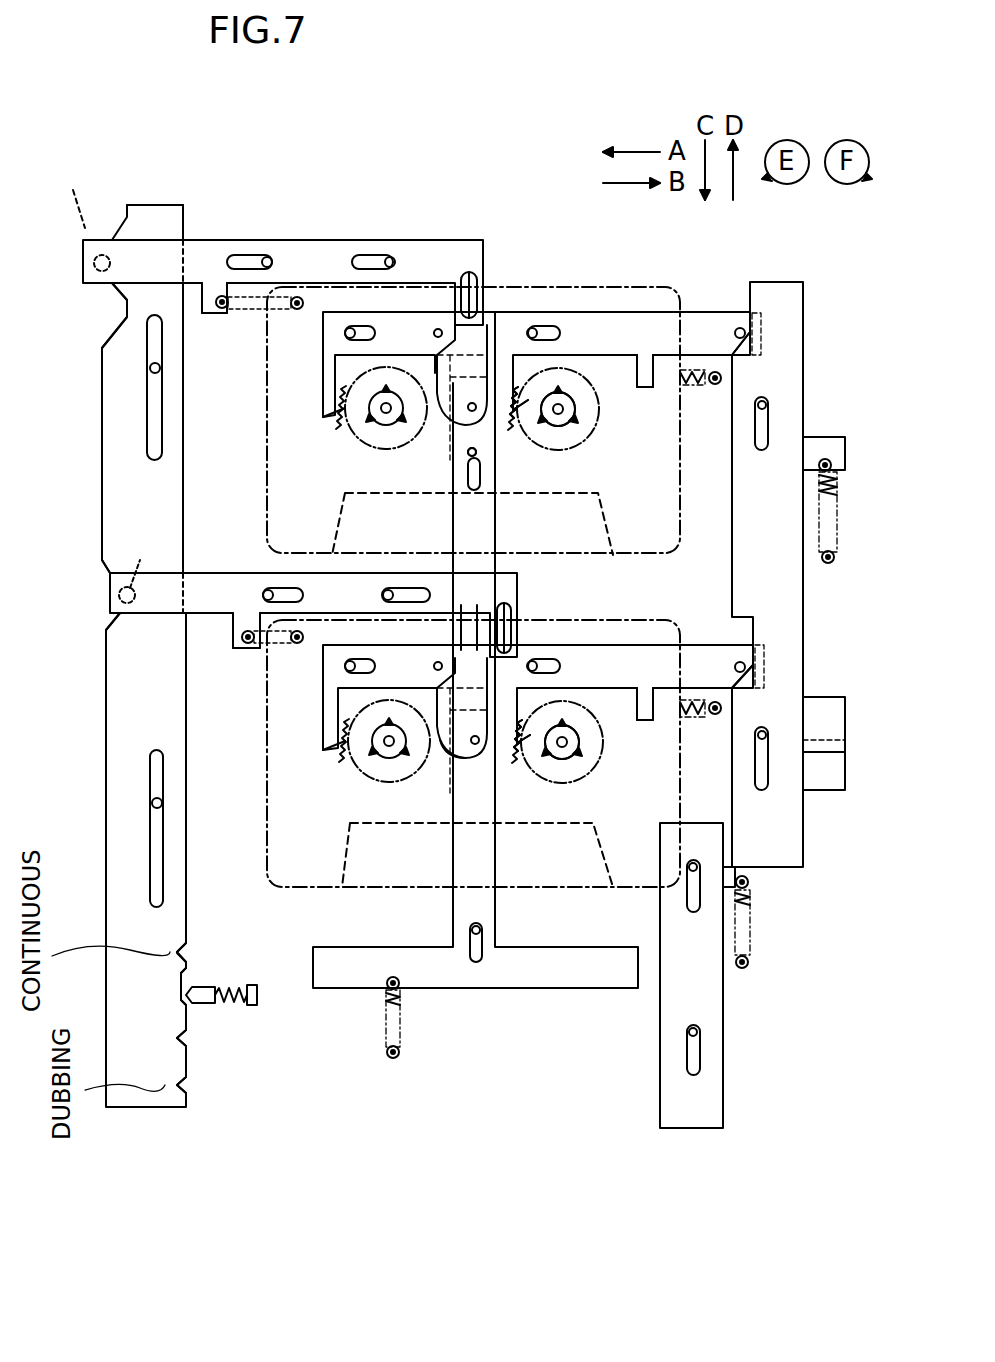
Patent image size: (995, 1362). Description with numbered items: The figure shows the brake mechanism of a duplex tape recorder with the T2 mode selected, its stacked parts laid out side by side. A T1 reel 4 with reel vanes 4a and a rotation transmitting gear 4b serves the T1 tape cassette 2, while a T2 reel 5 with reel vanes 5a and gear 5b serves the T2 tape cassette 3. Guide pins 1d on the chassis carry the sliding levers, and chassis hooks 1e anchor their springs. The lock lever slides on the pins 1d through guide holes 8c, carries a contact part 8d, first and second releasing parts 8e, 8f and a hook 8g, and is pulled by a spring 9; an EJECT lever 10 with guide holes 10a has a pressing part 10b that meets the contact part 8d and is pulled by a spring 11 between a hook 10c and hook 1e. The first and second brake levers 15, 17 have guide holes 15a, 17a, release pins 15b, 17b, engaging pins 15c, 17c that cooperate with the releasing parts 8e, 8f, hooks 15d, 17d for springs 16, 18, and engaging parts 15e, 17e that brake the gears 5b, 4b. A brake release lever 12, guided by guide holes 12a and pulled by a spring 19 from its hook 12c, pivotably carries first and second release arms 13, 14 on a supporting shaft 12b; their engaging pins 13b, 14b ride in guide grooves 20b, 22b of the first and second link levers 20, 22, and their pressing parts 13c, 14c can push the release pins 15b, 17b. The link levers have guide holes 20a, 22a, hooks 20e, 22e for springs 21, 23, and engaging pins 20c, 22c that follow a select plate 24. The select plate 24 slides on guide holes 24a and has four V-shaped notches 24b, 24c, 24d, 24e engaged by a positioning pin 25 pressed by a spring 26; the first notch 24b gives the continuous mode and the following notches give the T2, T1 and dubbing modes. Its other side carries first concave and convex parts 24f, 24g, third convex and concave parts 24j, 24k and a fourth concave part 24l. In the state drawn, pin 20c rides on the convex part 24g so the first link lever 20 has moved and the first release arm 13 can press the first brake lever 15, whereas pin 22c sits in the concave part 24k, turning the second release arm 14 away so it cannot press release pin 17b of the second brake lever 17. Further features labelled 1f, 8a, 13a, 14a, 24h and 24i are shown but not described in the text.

The guide pin 1d is at (272, 258).
The hook 1e is at (297, 310).
The spring anchor block 1f is at (257, 995).
The T1 tape cassette 2 is at (267, 828).
The T2 tape cassette 3 is at (267, 468).
The T1 reel 4 is at (389, 783).
The reel vanes 4a is at (590, 748).
The rotation transmitting gear 4b is at (538, 765).
The T2 reel 5 is at (386, 450).
The reel vanes 5a is at (585, 425).
The rotation transmitting gear 5b is at (540, 432).
The tab of plate 8 8a is at (820, 790).
The guide holes 8c is at (762, 452).
The contact part 8d is at (790, 868).
The first releasing part 8e is at (745, 340).
The second releasing part 8f is at (742, 674).
The hook 8g is at (825, 458).
The spring 9 is at (837, 516).
The EJECT lever 10 is at (695, 1129).
The guide holes 10a is at (700, 905).
The pressing part 10b is at (735, 867).
The hook 10c is at (748, 888).
The spring 11 is at (752, 948).
The brake release lever 12 is at (575, 988).
The guide holes 12a is at (482, 480).
The supporting shaft 12b is at (468, 411).
The hook 12c is at (398, 978).
The first release arm 13 is at (437, 366).
The pin of brake lever 13a is at (478, 452).
The engaging pin 13b is at (482, 300).
The pressing part 13c is at (466, 407).
The second release arm 14 is at (437, 696).
The tip of brake lever 14a is at (455, 760).
The engaging pin 14b is at (495, 640).
The pressing part 14c is at (467, 740).
The first brake lever 15 is at (606, 326).
The guide holes 15a is at (375, 333).
The release pin 15b is at (436, 329).
The engaging pin 15c is at (740, 338).
The hook 15d is at (647, 355).
The engaging part 15e is at (335, 415).
The spring 16 is at (692, 385).
The second brake lever 17 is at (622, 654).
The guide holes 17a is at (372, 660).
The release pin 17b is at (434, 667).
The engaging pin 17c is at (740, 668).
The hook 17d is at (645, 720).
The engaging part 17e is at (338, 748).
The spring 18 is at (693, 711).
The spring 19 is at (402, 1020).
The first link lever 20 is at (390, 240).
The guide holes 20a is at (255, 255).
The guide groove 20b is at (480, 275).
The engaging pin 20c is at (65, 195).
The hook 20e is at (215, 283).
The spring 21 is at (226, 310).
The second link lever 22 is at (205, 578).
The guide holes 22a is at (303, 596).
The guide groove 22b is at (512, 612).
The engaging pin 22c is at (118, 595).
The hook 22e is at (240, 648).
The spring 23 is at (255, 646).
The select plate 24 is at (162, 1108).
The guide holes 24a is at (147, 400).
The first V-shaped notch 24b is at (190, 948).
The second V-shaped notch 24c is at (162, 981).
The third V-shaped notch 24d is at (190, 1040).
The fourth V-shaped notch 24e is at (190, 1085).
The first concave part 24f is at (127, 213).
The first convex part 24g is at (131, 261).
The cam edge of slide plate 24h is at (112, 290).
The cam edge of slide plate 24i is at (102, 348).
The third convex part 24j is at (102, 560).
The third concave part 24k is at (152, 556).
The fourth concave part 24l is at (106, 640).
The positioning pin 25 is at (205, 987).
The spring 26 is at (235, 990).
The T1 mode T1 is at (267, 800).
The T2 mode T2 is at (267, 440).